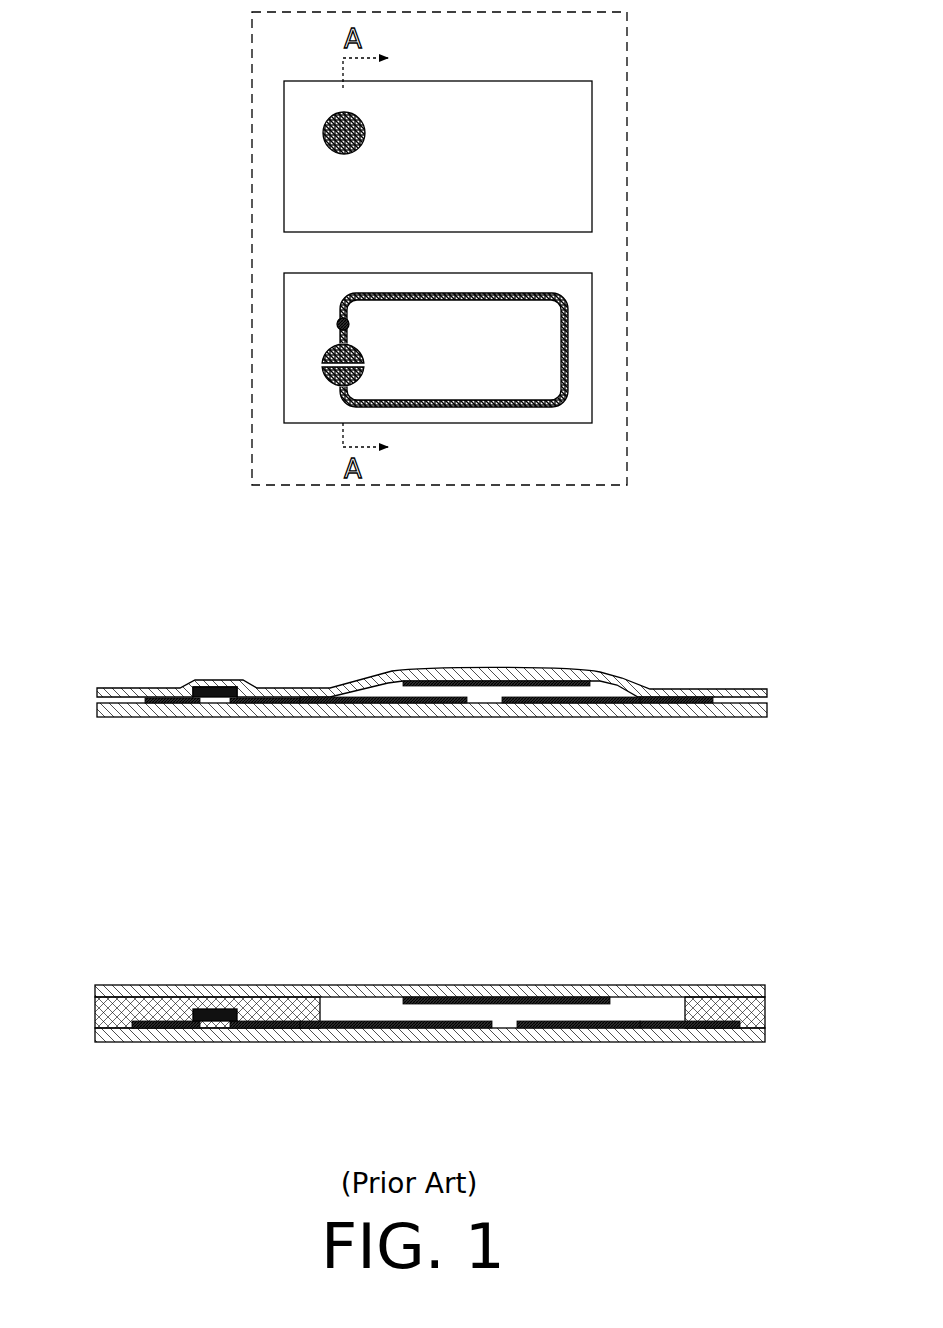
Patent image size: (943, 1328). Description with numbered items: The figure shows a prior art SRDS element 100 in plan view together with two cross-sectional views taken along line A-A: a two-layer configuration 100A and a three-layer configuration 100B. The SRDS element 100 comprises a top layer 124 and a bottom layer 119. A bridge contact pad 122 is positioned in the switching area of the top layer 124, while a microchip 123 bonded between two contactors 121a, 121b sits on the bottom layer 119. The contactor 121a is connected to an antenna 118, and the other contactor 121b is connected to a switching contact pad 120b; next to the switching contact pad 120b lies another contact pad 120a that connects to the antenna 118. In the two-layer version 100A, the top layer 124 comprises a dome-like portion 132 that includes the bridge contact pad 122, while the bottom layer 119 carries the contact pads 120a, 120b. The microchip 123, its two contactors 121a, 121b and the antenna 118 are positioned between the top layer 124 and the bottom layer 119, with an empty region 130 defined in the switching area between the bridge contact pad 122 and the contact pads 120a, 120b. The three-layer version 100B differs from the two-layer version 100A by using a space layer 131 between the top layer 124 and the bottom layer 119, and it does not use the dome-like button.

The SRDS element 100 is at (163, 147).
The two-layer SRDS element 100A is at (172, 590).
The three-layer SRDS element 100B is at (170, 907).
The antenna 118 is at (478, 402).
The bottom layer 119 is at (578, 318).
The contact pad 120a is at (335, 376).
The switching contact pad 120b is at (335, 355).
The contactor 121a is at (340, 320).
The contactor 121b is at (338, 325).
The bridge contact pad 122 is at (330, 122).
The microchip 123 is at (352, 325).
The top layer 124 is at (573, 128).
The empty region 130 is at (386, 672).
The space layer 131 is at (107, 1010).
The dome-like portion 132 is at (627, 675).